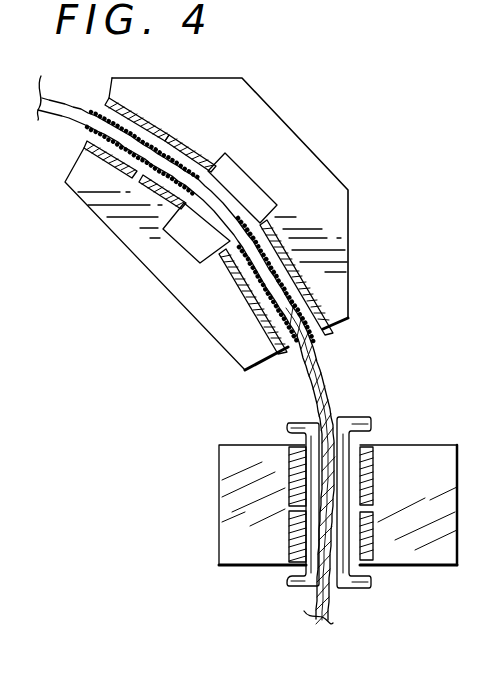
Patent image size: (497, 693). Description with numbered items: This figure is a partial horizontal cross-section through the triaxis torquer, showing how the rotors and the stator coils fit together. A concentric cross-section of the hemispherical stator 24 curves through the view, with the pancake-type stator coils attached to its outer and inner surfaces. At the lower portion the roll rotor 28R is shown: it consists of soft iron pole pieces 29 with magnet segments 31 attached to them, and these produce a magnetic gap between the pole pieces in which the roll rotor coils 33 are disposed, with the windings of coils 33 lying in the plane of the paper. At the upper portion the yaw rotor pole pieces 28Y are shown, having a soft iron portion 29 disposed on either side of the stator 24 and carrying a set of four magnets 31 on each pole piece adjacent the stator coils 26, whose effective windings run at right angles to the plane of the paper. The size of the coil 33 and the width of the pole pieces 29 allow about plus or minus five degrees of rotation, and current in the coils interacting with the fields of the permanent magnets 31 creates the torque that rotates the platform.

The hemispherical stator 24 is at (326, 397).
The yaw stator coils 26 is at (202, 179).
The yaw rotor pole pieces 28Y is at (112, 259).
The roll rotor 28R is at (192, 546).
The soft iron pole pieces 29 is at (338, 218).
The permanent magnets 31 is at (109, 91).
The roll rotor coils 33 is at (297, 587).